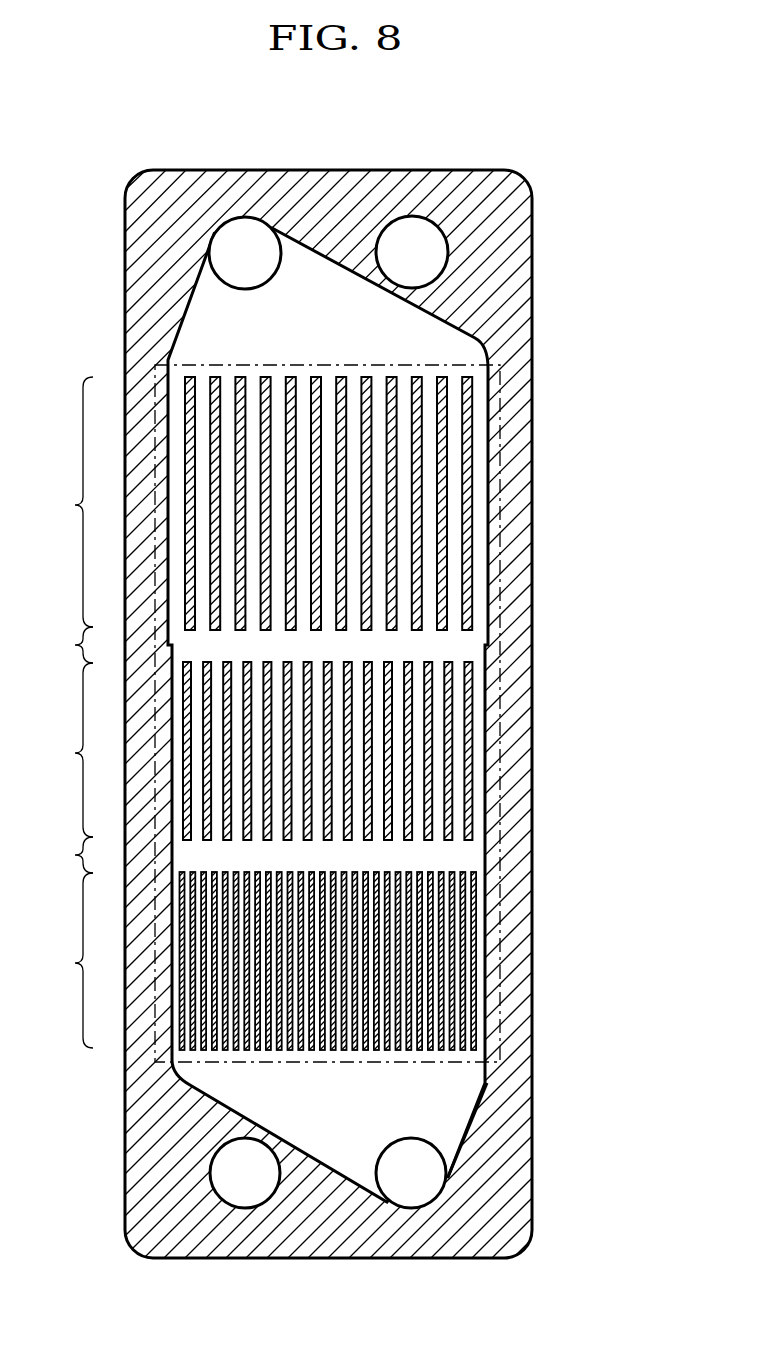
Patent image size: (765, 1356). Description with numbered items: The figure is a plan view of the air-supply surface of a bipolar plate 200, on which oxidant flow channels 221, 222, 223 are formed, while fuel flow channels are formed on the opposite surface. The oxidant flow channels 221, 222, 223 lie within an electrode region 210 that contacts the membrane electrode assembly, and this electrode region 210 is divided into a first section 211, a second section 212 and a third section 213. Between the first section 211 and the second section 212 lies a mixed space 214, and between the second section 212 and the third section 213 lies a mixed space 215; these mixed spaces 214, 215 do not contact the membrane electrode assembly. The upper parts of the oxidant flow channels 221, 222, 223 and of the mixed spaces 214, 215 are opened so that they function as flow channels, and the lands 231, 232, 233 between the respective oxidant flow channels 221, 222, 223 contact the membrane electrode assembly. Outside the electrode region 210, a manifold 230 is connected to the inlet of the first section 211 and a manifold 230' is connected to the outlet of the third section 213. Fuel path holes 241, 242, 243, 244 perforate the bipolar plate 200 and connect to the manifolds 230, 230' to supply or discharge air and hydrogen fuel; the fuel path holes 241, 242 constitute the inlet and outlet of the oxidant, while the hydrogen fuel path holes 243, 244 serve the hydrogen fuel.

The bipolar plate 200 is at (533, 300).
The electrode region 210 is at (500, 598).
The first section 211 is at (321, 503).
The second section 212 is at (321, 751).
The third section 213 is at (321, 961).
The mixed space 214 is at (60, 645).
The mixed space 215 is at (60, 855).
The oxidant flow channel 221 is at (400, 503).
The oxidant flow channel 222 is at (399, 751).
The oxidant flow channel 223 is at (398, 961).
The land 231 is at (441, 449).
The land 232 is at (447, 697).
The land 233 is at (452, 907).
The manifold 230 is at (265, 715).
The manifold 230' is at (532, 1130).
The fuel path hole 241 is at (245, 225).
The fuel path hole 242 is at (413, 1197).
The hydrogen fuel path hole 243 is at (245, 1197).
The hydrogen fuel path hole 244 is at (413, 225).